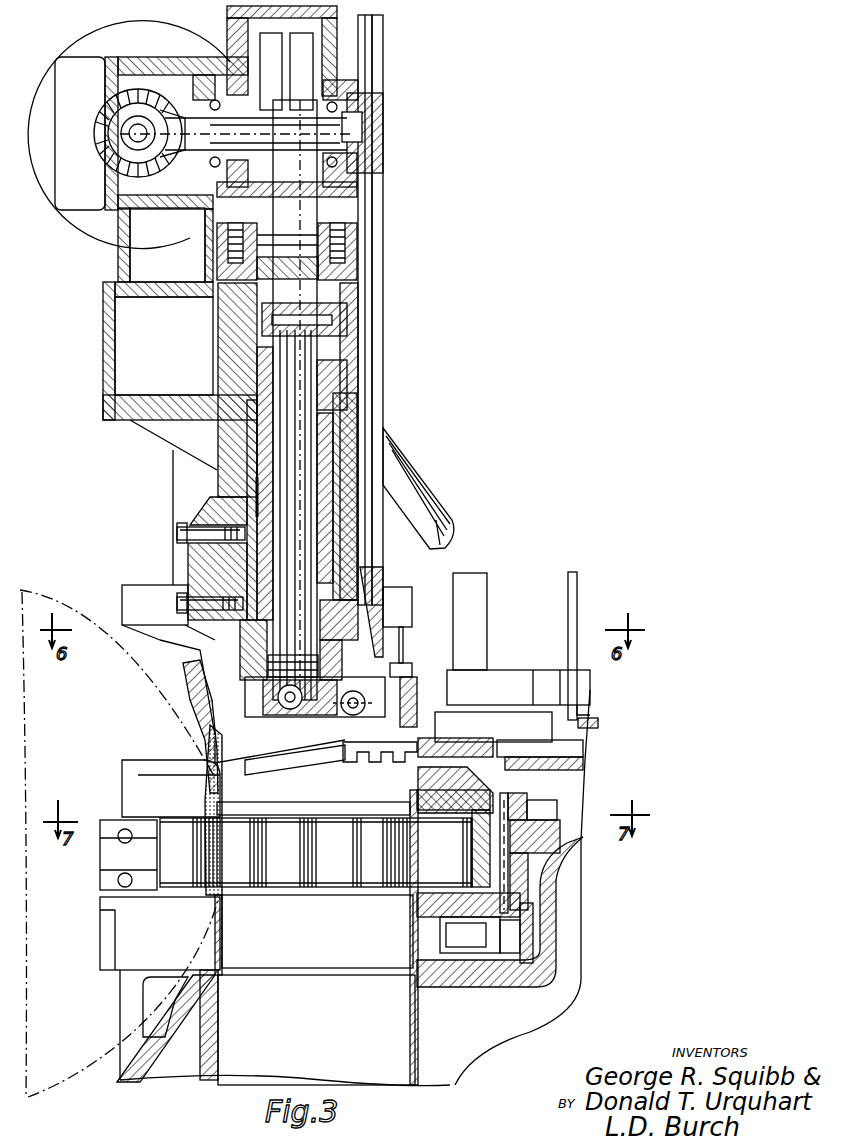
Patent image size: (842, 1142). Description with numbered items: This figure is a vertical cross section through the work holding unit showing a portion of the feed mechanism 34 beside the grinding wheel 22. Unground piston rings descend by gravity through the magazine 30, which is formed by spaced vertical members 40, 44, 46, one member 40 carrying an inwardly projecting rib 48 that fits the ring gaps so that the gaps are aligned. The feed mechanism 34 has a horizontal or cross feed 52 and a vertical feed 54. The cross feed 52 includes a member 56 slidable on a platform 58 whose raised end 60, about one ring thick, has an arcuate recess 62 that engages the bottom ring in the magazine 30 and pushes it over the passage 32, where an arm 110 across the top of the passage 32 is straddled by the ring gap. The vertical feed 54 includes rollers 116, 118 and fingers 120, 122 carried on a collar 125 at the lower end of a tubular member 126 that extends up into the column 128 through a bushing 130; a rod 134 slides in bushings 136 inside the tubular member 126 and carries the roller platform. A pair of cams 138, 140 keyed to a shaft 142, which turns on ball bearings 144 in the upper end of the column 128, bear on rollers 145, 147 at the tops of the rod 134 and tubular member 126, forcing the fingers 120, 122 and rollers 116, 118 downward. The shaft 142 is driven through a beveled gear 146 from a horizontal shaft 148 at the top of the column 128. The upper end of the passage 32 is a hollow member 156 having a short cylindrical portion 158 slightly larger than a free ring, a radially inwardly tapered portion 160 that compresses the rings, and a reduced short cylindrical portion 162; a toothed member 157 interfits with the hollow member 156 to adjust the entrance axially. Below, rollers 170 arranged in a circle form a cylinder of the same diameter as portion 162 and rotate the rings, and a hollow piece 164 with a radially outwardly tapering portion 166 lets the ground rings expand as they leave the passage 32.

The grinding wheel 22 is at (115, 612).
The magazine 30 is at (523, 666).
The passage 32 is at (322, 978).
The feed mechanism 34 is at (420, 590).
The vertical member 40 is at (364, 60).
The vertical member 44 is at (480, 615).
The vertical member 46 is at (578, 608).
The rib 48 is at (375, 90).
The horizontal or cross feed 52 is at (596, 710).
The vertical feed 54 is at (412, 690).
The member 56 is at (600, 723).
The platform 58 is at (583, 762).
The raised end 60 is at (585, 742).
The arcuate recess 62 is at (575, 740).
The arm 110 is at (185, 630).
The roller 116 is at (300, 720).
The roller 118 is at (345, 720).
The finger 120 is at (365, 755).
The finger 122 is at (255, 735).
The collar 125 is at (268, 650).
The tubular member 126 is at (255, 490).
The column 128 is at (392, 303).
The bushing 130 is at (340, 535).
The rod 134 is at (275, 440).
The bushings 136 is at (330, 560).
The cam 138 is at (270, 108).
The cam 140 is at (303, 110).
The shaft 142 is at (368, 135).
The ball bearings 144 is at (205, 165).
The roller 145 is at (287, 251).
The beveled gear 146 is at (165, 245).
The roller 147 is at (262, 310).
The horizontal shaft 148 is at (128, 134).
The hollow member 156 is at (410, 765).
The member 157 is at (493, 727).
The short cylindrical portion 158 is at (195, 718).
The tapered portion 160 is at (210, 785).
The short cylindrical portion of reduced diameter 162 is at (405, 840).
The hollow piece 164 is at (412, 955).
The radially outwardly tapering portion 166 is at (222, 928).
The rollers 170 is at (300, 882).